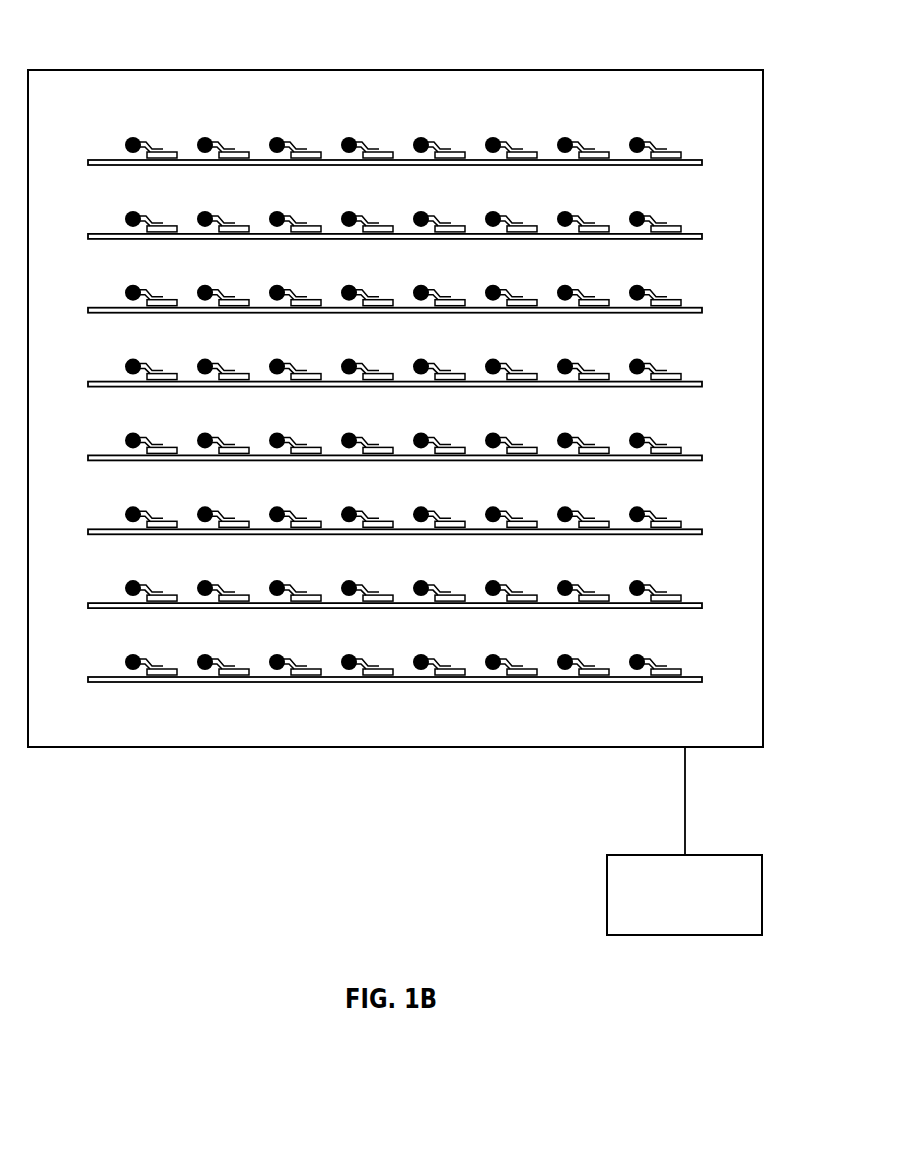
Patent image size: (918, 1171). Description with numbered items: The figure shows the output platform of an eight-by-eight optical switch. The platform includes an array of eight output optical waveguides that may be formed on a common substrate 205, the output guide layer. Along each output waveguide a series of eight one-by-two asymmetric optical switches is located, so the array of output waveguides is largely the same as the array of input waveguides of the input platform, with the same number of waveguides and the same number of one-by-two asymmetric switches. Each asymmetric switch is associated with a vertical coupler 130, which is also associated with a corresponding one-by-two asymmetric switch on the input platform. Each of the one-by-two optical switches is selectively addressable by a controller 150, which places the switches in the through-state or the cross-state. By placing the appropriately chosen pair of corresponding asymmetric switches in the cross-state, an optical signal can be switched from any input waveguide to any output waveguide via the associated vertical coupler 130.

The common substrate 205 is at (753, 715).
The vertical coupler 130 is at (352, 210).
The controller 150 is at (607, 893).